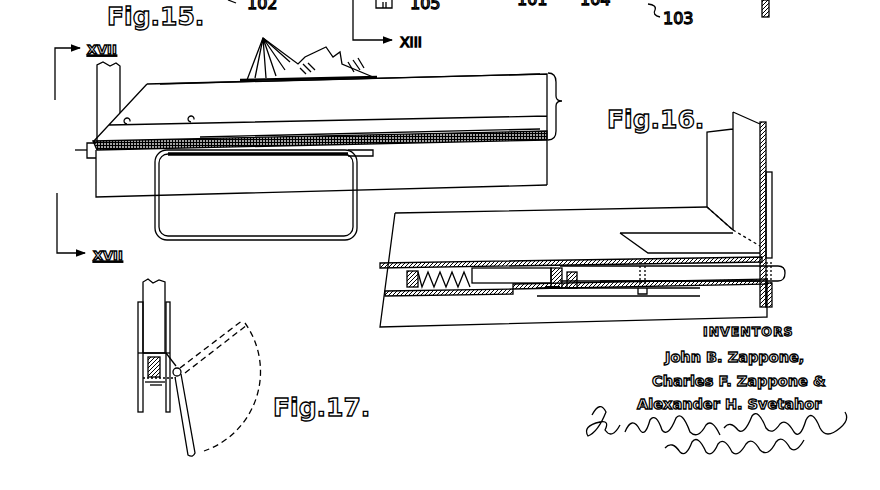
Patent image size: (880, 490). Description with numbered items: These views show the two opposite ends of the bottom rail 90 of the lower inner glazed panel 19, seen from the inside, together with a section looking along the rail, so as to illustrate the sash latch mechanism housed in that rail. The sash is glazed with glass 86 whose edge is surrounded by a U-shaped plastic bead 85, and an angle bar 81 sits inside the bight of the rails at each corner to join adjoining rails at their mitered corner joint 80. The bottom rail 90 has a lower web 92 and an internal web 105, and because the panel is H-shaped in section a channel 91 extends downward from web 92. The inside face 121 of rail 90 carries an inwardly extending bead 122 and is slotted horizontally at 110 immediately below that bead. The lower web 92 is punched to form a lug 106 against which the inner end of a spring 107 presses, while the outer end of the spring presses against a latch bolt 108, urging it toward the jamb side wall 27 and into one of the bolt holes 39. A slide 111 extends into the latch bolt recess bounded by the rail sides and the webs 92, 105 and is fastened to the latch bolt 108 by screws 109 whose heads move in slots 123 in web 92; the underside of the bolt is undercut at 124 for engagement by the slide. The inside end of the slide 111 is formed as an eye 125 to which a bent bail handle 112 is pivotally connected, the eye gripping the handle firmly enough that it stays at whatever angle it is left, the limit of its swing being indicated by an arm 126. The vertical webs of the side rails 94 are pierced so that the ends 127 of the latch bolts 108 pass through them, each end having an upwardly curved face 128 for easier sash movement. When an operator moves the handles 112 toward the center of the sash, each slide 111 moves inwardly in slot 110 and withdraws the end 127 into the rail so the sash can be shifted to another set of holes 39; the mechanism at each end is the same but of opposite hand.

In FIG. 15, the lower inner glass panel 19 is at (207, 62).
In FIG. 16, the side wall portion 27 is at (773, 202).
In FIG. 16, the bolt holes 39 is at (773, 242).
In FIG. 16, the corner joint 80 is at (716, 212).
In FIG. 15, the angle bar 81 is at (113, 81).
In FIG. 16, the angle bar 81 is at (735, 179).
In FIG. 17, the angle bar 81 is at (156, 294).
In FIG. 15, the plastic bead 85 is at (281, 76).
In FIG. 15, the glass 86 is at (287, 56).
In FIG. 15, the bottom rail 90 is at (569, 106).
In FIG. 17, the bottom rail 90 is at (140, 368).
In FIG. 17, the channel 91 is at (156, 403).
In FIG. 16, the lower web 92 is at (462, 296).
In FIG. 17, the lower web 92 is at (150, 386).
In FIG. 16, the side rails 94 is at (766, 148).
In FIG. 16, the internal web 105 is at (471, 264).
In FIG. 17, the internal web 105 is at (146, 352).
In FIG. 16, the lug 106 is at (410, 278).
In FIG. 16, the spring 107 is at (455, 255).
In FIG. 16, the latch bolt 108 is at (718, 280).
In FIG. 17, the latch bolt 108 is at (145, 373).
In FIG. 16, the screws 109 is at (565, 290).
In FIG. 15, the slot 110 is at (361, 156).
In FIG. 16, the slide 111 is at (538, 290).
In FIG. 15, the bent handle 112 is at (284, 239).
In FIG. 17, the bent handle 112 is at (191, 411).
In FIG. 15, the inside face 121 is at (460, 88).
In FIG. 17, the inside face 121 is at (172, 318).
In FIG. 15, the bead 122 is at (506, 130).
In FIG. 17, the bead 122 is at (176, 348).
In FIG. 16, the slots 123 is at (545, 291).
In FIG. 16, the undercut 124 is at (532, 283).
In FIG. 15, the eye 125 is at (250, 155).
In FIG. 17, the eye 125 is at (183, 370).
In FIG. 17, the arm 126 is at (262, 348).
In FIG. 15, the latch bolt ends 127 is at (86, 160).
In FIG. 16, the latch bolt ends 127 is at (787, 280).
In FIG. 15, the upwardly curved face 128 is at (90, 150).
In FIG. 16, the upwardly curved face 128 is at (784, 264).